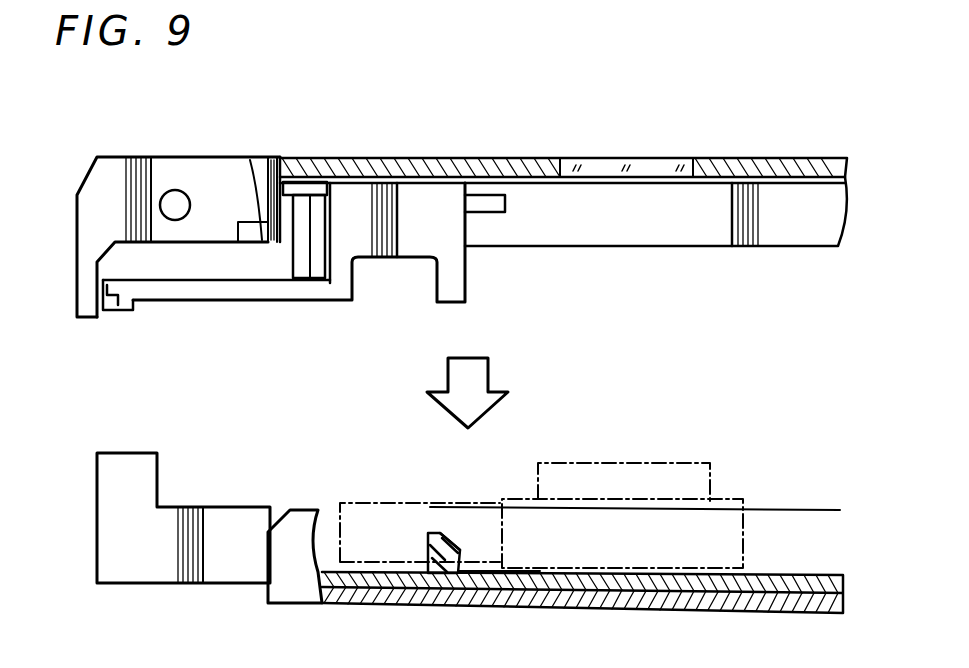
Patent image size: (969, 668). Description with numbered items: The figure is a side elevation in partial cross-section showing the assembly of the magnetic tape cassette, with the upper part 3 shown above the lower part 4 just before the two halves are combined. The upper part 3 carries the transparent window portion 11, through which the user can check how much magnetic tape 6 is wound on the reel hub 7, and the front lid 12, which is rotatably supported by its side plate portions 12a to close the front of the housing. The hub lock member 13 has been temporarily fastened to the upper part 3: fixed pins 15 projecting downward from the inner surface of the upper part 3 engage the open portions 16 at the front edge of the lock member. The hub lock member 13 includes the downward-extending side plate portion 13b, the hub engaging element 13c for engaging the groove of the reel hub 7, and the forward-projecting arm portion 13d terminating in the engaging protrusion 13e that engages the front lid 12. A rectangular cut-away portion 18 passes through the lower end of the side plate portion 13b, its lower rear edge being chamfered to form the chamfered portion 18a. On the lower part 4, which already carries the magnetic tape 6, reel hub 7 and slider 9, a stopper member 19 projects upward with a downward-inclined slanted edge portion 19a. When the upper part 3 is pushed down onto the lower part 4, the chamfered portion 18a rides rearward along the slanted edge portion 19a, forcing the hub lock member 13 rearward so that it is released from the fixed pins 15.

The upper half or part 3 is at (545, 158).
The lower half or part 4 is at (218, 586).
The magnetic tape 6 is at (357, 502).
The reel hub 7 is at (731, 500).
The slider 9 is at (300, 606).
The transparent window portion 11 is at (647, 170).
The front lid 12 is at (72, 200).
The side plate portion 12a is at (192, 163).
The hub lock member 13 is at (470, 280).
The side plate portion 13b is at (425, 195).
The hub engaging element 13c is at (490, 194).
The arm portion 13d is at (208, 290).
The engaging protrusion 13e is at (112, 310).
The fixed pin 15 is at (308, 222).
The engaging open portion 16 is at (311, 184).
The cut-away rectangular portion 18 is at (357, 287).
The chamfered portion 18a is at (433, 287).
The stopper member 19 is at (428, 535).
The slanted edge portion 19a is at (453, 543).